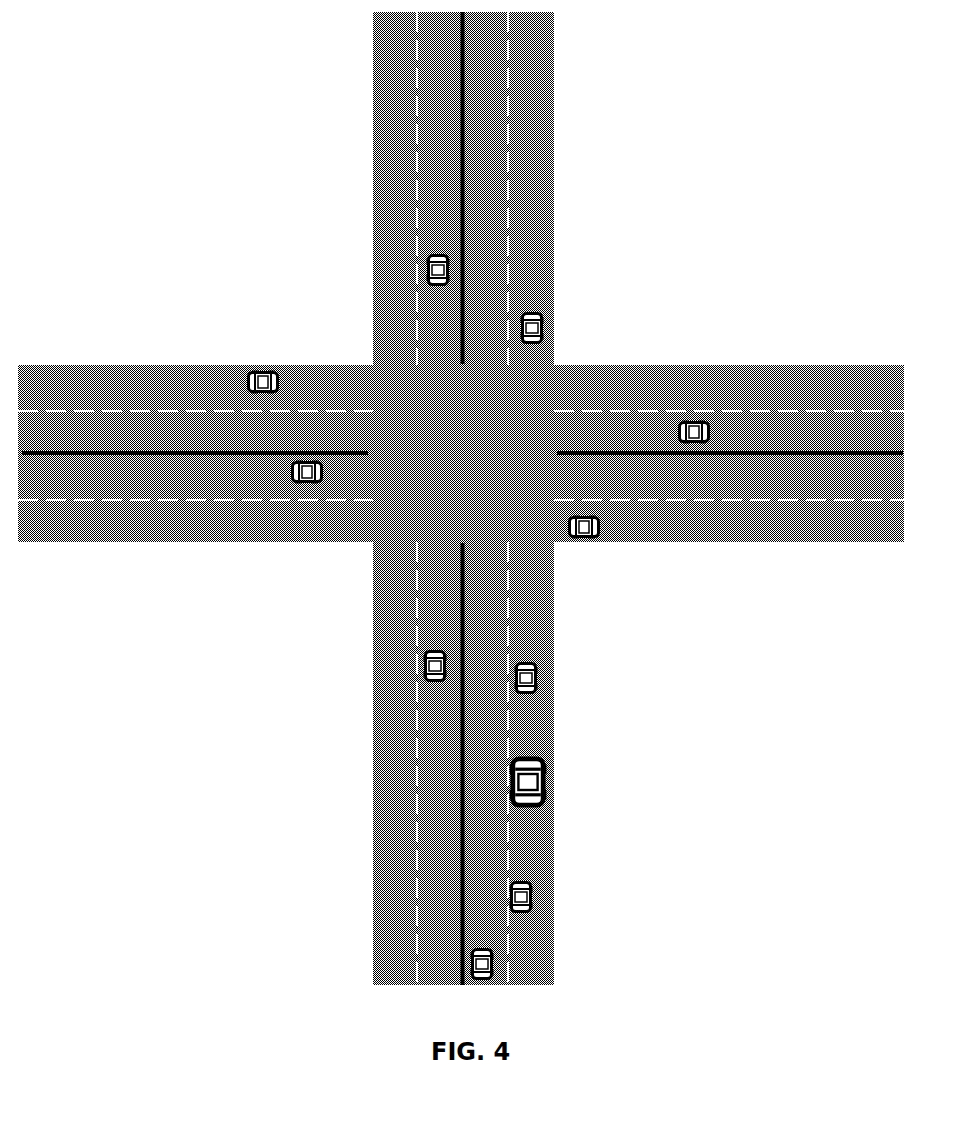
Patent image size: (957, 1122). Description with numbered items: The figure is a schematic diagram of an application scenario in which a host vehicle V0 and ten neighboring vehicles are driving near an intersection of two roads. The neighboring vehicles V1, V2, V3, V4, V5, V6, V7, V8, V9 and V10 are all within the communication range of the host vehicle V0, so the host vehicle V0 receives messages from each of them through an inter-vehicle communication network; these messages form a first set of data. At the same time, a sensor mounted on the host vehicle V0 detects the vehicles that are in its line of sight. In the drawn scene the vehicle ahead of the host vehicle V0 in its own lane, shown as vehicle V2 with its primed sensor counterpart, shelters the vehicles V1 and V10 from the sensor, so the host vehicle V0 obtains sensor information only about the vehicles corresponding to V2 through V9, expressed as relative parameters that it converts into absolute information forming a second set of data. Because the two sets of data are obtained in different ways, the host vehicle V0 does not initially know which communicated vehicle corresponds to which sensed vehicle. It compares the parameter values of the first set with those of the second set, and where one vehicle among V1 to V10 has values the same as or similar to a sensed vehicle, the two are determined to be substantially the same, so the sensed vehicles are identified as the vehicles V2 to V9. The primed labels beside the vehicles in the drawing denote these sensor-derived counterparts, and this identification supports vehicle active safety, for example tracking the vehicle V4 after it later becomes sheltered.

The host vehicle V0 is at (523, 886).
The neighboring vehicle V1 is at (528, 664).
The neighboring vehicle V2 is at (531, 758).
The neighboring vehicle V3 is at (436, 643).
The neighboring vehicle V4 is at (486, 937).
The neighboring vehicle V5 is at (656, 432).
The neighboring vehicle V6 is at (622, 528).
The neighboring vehicle V7 is at (225, 382).
The neighboring vehicle V8 is at (344, 473).
The neighboring vehicle V9 is at (441, 293).
The neighboring vehicle V10 is at (534, 316).